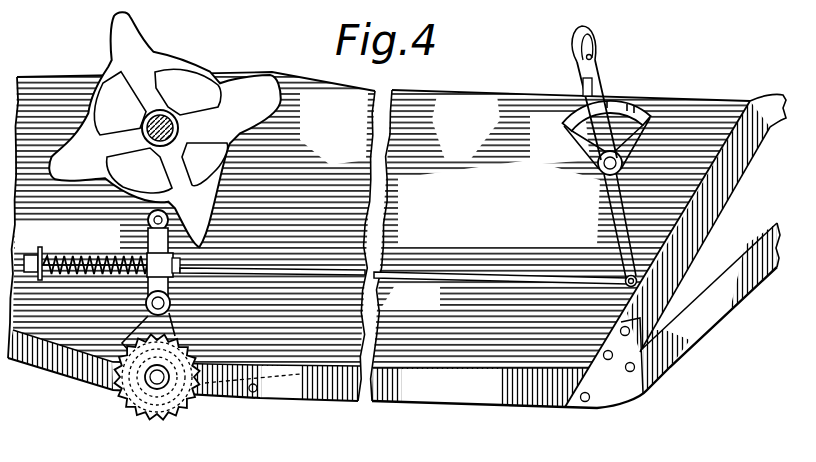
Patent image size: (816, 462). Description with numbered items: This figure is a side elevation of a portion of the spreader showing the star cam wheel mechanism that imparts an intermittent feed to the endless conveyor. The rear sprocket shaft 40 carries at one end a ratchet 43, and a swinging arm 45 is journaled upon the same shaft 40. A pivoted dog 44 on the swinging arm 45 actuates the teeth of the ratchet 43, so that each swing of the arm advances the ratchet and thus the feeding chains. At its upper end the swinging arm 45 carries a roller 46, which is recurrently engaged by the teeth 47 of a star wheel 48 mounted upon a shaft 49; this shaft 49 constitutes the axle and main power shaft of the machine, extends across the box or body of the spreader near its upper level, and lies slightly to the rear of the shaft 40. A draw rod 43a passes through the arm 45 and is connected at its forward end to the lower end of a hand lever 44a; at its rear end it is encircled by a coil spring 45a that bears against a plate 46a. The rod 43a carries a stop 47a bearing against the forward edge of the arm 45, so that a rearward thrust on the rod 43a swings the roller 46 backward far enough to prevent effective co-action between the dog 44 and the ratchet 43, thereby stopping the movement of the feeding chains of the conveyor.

The rear sprocket shaft 40 is at (155, 378).
The ratchet 43 is at (193, 414).
The draw rod 43a is at (440, 275).
The pivoted dog 44 is at (144, 323).
The hand lever 44a is at (620, 234).
The swinging arm 45 is at (156, 244).
The coil spring 45a is at (35, 273).
The roller 46 is at (168, 218).
The plate 46a is at (38, 273).
The teeth 47 is at (183, 44).
The stop 47a is at (272, 257).
The star wheel 48 is at (190, 62).
The shaft 49 is at (173, 112).